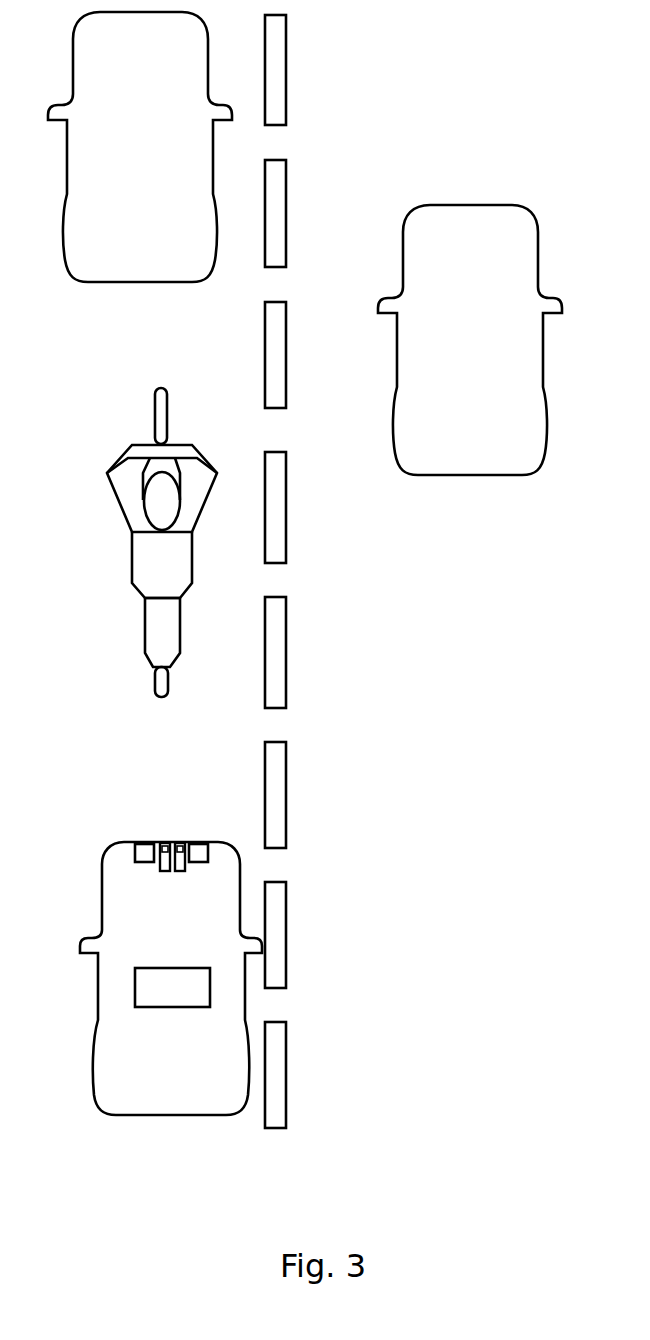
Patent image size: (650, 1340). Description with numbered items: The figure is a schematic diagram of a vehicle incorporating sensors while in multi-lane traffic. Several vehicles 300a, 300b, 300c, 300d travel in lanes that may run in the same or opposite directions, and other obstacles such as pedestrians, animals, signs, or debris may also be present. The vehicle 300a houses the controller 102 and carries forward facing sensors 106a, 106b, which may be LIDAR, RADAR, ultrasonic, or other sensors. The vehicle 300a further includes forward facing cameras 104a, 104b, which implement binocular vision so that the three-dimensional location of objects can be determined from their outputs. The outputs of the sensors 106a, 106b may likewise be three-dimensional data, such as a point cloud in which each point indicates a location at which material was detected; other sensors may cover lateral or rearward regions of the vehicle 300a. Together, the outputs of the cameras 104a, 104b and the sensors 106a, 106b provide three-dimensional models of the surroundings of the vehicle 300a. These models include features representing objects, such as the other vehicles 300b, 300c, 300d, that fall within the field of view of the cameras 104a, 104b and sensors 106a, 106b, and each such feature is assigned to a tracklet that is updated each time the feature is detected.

The controller 102 is at (155, 1002).
The forward facing camera 104a is at (162, 868).
The forward facing camera 104b is at (180, 871).
The forward facing sensor 106a is at (143, 852).
The forward facing sensor 106b is at (200, 852).
The vehicle 300a is at (178, 1115).
The vehicle 300b is at (177, 627).
The vehicle 300c is at (128, 282).
The vehicle 300d is at (458, 475).